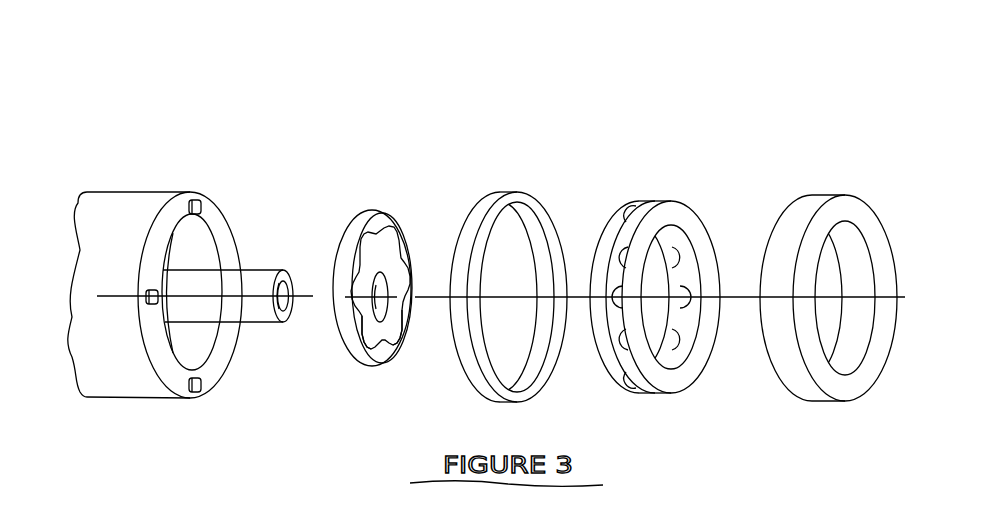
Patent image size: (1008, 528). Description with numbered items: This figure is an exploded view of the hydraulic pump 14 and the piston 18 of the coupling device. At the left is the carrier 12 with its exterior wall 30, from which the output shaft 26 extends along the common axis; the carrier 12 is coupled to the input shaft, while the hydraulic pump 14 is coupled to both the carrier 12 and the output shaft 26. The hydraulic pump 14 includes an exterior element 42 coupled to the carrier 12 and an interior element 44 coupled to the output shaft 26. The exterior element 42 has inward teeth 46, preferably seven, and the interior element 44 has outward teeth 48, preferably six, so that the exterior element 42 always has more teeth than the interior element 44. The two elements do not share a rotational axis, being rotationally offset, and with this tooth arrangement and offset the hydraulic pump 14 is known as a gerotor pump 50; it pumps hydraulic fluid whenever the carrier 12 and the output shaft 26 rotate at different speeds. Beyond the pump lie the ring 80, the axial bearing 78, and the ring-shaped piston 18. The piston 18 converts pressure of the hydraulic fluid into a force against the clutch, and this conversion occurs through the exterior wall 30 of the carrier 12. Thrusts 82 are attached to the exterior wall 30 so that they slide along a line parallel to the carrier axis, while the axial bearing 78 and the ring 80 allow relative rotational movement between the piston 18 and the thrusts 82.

The carrier 12 is at (217, 227).
The hydraulic pump 14 is at (673, 226).
The piston 18 is at (835, 210).
The output shaft 26 is at (260, 312).
The exterior wall 30 is at (198, 255).
The exterior element 42 is at (377, 220).
The interior element 44 is at (388, 343).
The inward teeth 46 is at (407, 250).
The outward teeth 48 is at (350, 343).
The gerotor pump 50 is at (379, 256).
The axial bearing 78 is at (666, 203).
The ring 80 is at (530, 213).
The thrusts 82 is at (197, 200).